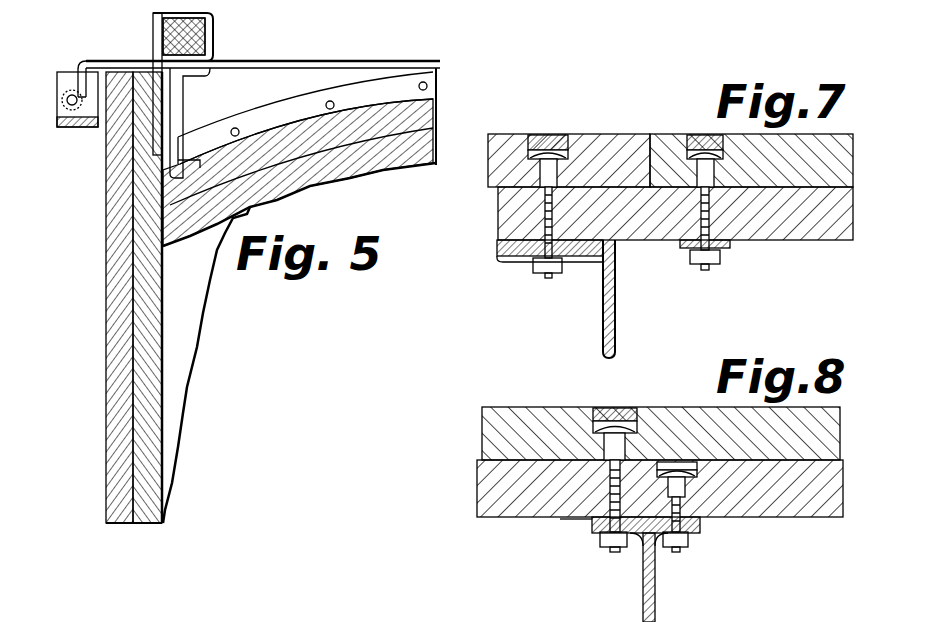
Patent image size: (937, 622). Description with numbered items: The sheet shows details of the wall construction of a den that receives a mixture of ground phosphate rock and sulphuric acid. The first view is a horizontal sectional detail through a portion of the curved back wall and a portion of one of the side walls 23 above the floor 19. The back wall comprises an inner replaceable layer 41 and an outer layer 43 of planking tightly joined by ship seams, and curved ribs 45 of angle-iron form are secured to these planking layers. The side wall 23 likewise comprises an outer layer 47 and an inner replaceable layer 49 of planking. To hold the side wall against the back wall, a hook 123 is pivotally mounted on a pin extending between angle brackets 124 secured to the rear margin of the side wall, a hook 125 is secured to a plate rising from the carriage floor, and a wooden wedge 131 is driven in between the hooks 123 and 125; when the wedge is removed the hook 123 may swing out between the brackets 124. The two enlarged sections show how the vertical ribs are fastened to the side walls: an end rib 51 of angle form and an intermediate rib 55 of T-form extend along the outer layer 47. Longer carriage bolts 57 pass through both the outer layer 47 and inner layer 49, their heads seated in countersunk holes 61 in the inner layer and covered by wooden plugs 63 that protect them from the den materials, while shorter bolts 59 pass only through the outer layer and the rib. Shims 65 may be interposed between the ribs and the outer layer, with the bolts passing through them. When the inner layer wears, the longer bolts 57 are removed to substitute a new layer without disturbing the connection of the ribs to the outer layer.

In FIG. 5, the floor 19 is at (290, 82).
In FIG. 5, the side wall 23 is at (106, 297).
In FIG. 5, the inner replaceable layer 41 is at (430, 147).
In FIG. 5, the outer layer 43 is at (427, 123).
In FIG. 5, the curved rib 45 is at (438, 70).
In FIG. 5, the outer layer 47 is at (117, 390).
In FIG. 7, the outer layer 47 is at (790, 228).
In FIG. 8, the outer layer 47 is at (485, 495).
In FIG. 5, the inner replaceable layer 49 is at (150, 420).
In FIG. 7, the inner replaceable layer 49 is at (827, 165).
In FIG. 8, the inner replaceable layer 49 is at (492, 435).
In FIG. 5, the end rib 51 is at (91, 128).
In FIG. 7, the end rib 51 is at (605, 300).
In FIG. 8, the intermediate rib 55 is at (648, 578).
In FIG. 7, the carriage bolt 57 is at (503, 230).
In FIG. 8, the carriage bolt 57 is at (578, 518).
In FIG. 8, the shorter bolt 59 is at (700, 518).
In FIG. 8, the countersunk hole 61 is at (620, 407).
In FIG. 7, the wooden plug 63 is at (550, 137).
In FIG. 8, the wooden plug 63 is at (604, 407).
In FIG. 7, the shim 65 is at (497, 248).
In FIG. 5, the hook 123 is at (92, 55).
In FIG. 5, the angle bracket 124 is at (58, 84).
In FIG. 5, the hook 125 is at (156, 22).
In FIG. 5, the wooden wedge 131 is at (214, 26).